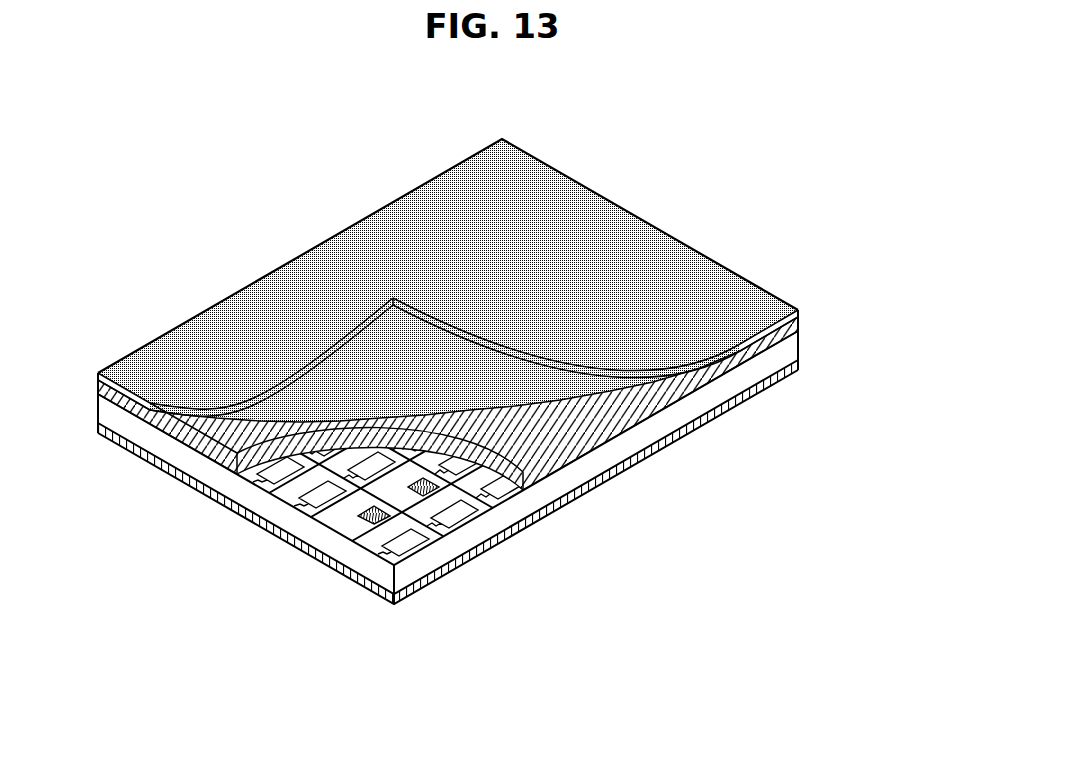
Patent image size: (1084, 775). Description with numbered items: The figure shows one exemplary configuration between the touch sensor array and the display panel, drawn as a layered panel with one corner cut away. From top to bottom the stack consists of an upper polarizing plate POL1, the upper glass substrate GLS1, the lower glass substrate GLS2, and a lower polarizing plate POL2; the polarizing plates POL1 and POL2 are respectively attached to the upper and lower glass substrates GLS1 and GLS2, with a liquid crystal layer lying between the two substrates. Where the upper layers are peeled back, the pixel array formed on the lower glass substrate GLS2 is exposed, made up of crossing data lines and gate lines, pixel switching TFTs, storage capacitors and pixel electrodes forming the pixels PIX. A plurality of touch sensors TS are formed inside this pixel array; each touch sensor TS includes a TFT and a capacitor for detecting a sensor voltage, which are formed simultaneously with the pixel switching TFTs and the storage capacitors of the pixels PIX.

The polarizing plate POL1 is at (800, 311).
The upper glass substrate GLS1 is at (800, 328).
The lower glass substrate GLS2 is at (790, 349).
The polarizing plate POL2 is at (800, 371).
The touch sensor TS is at (358, 521).
The pixel PIX is at (385, 558).